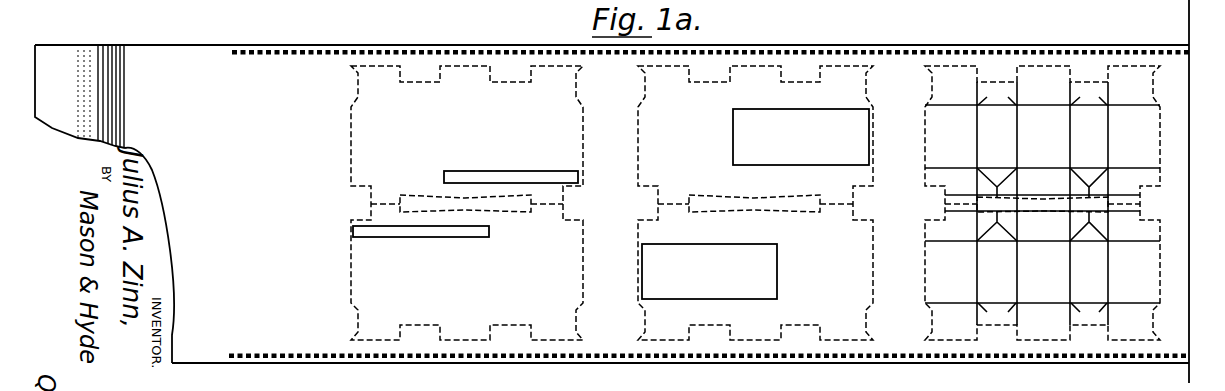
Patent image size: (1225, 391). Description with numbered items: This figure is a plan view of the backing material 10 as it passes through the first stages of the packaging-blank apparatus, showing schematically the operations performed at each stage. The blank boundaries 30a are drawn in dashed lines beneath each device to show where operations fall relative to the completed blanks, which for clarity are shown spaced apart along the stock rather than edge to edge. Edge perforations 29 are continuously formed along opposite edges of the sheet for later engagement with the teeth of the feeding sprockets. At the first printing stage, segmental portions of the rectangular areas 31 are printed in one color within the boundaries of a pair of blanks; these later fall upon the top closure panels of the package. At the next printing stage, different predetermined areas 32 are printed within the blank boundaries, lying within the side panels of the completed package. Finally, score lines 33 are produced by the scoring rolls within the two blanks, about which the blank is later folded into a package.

The backing material 10 is at (188, 44).
The edge perforations 29 is at (232, 56).
The blank boundaries 30a is at (350, 151).
The rectangular areas 31 is at (505, 176).
The predetermined areas 32 is at (745, 131).
The score lines 33 is at (995, 126).